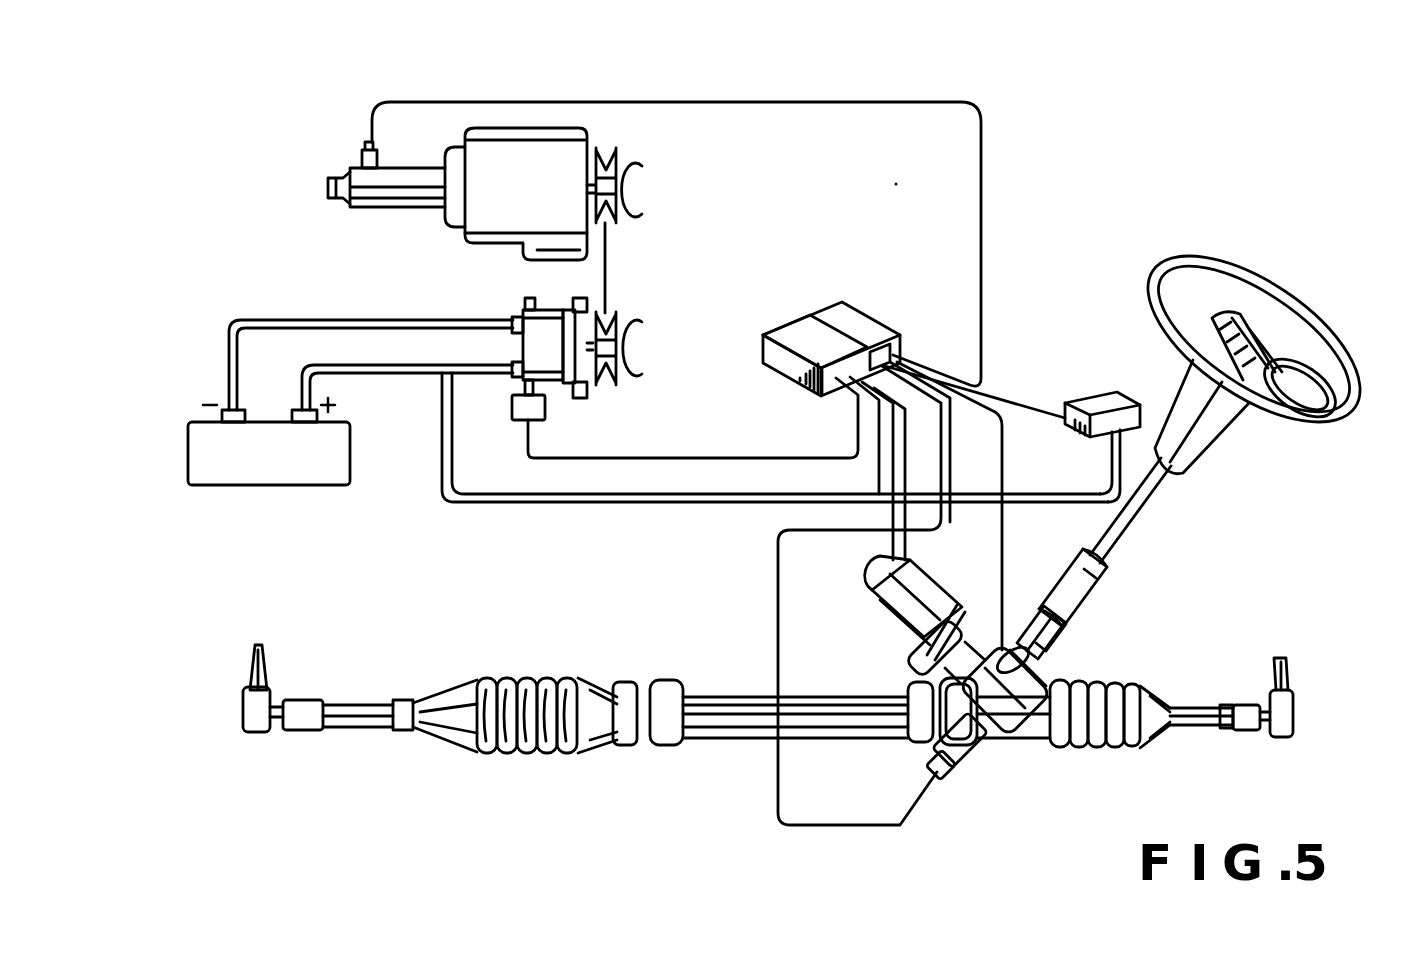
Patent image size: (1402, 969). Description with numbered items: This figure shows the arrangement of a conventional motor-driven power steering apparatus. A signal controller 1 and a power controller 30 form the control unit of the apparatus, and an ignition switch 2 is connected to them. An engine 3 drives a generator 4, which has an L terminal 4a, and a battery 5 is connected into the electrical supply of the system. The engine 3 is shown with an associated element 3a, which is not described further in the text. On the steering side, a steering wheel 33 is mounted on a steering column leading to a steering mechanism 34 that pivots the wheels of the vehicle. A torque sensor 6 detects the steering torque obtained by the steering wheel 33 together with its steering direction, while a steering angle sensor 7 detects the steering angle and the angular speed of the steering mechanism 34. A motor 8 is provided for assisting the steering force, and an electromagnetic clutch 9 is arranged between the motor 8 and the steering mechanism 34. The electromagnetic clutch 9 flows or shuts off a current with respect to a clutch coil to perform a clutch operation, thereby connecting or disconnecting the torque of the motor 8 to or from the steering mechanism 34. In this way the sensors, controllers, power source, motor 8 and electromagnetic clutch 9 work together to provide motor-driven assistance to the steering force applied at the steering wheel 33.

The signal controller 1 is at (855, 320).
The ignition switch 2 is at (1110, 403).
The engine 3 is at (465, 238).
The engine rotation sensor 3a is at (363, 160).
The generator 4 is at (548, 304).
The L terminal 4a is at (545, 408).
The battery 5 is at (322, 486).
The torque sensor 6 is at (1067, 645).
The steering angle sensor 7 is at (955, 773).
The motor 8 is at (875, 583).
The electromagnetic clutch 9 is at (908, 657).
The power controller 30 is at (792, 332).
The steering wheel 33 is at (1276, 282).
The steering mechanism 34 is at (723, 745).